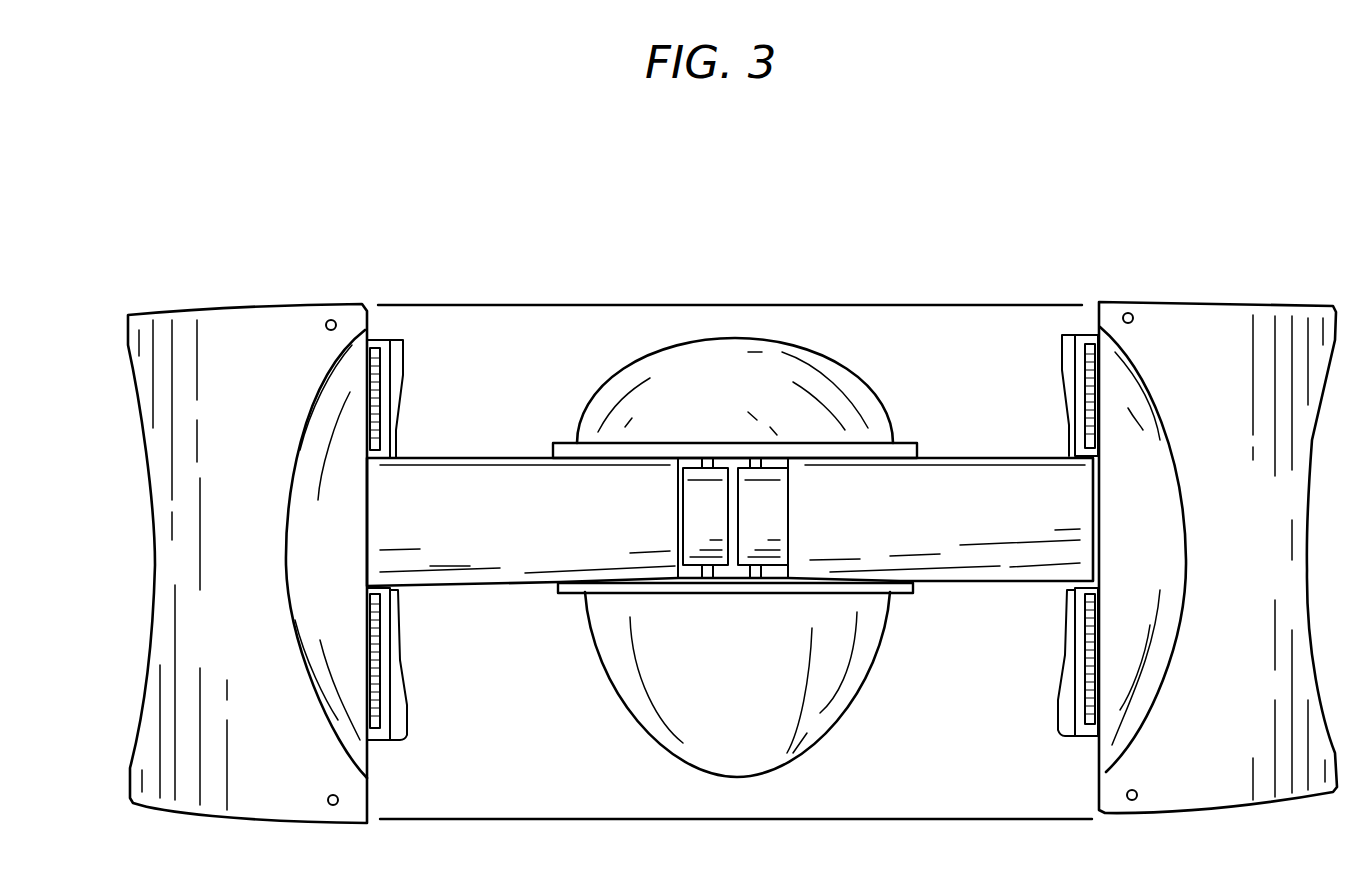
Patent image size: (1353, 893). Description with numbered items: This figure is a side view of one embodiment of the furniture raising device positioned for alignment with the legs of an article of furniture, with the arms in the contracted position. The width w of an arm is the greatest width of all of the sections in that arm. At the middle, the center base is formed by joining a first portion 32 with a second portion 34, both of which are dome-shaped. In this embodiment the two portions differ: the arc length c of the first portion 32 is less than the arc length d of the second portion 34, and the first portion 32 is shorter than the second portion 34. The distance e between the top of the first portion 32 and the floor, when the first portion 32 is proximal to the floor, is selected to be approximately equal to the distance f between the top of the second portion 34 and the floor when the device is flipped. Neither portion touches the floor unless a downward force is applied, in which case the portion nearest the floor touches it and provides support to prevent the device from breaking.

The first portion 32 is at (766, 390).
The second portion 34 is at (794, 684).
The width of the arm w is at (510, 459).
The distance between the top of the first portion and the floor e is at (738, 307).
The distance between the top of the second portion and the floor f is at (741, 779).
The arc length of the first portion c is at (784, 354).
The arc length of the second portion d is at (778, 760).